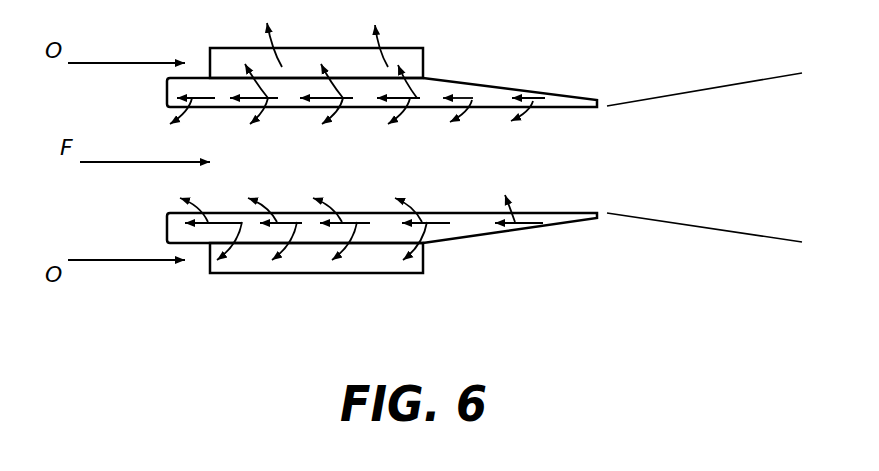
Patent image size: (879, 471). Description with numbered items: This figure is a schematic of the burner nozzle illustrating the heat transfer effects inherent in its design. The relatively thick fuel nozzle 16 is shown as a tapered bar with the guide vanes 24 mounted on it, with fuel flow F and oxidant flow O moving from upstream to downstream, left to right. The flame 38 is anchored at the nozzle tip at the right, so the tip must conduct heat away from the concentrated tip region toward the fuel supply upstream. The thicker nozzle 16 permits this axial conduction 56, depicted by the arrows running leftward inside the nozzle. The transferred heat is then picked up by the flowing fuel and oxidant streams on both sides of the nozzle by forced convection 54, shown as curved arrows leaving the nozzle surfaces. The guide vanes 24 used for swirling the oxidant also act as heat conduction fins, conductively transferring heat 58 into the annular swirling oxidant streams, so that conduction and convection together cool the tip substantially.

The fuel nozzle 16 is at (520, 88).
The guide vanes 24 is at (302, 48).
The flame 38 is at (708, 110).
The forced convection heat transfer 54 is at (377, 45).
The axial conduction 56 is at (512, 230).
The conductive heat transfer through guide vanes 58 is at (347, 233).